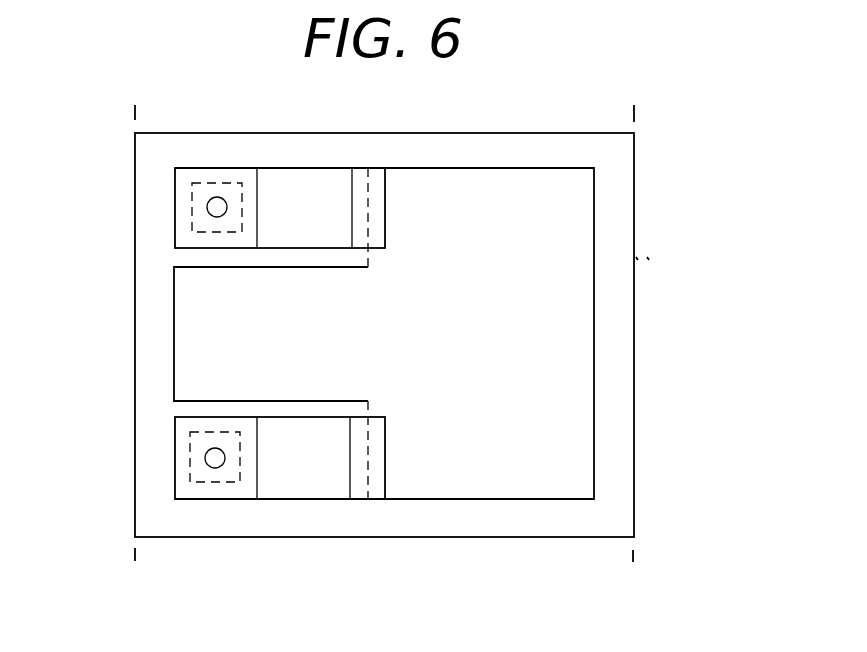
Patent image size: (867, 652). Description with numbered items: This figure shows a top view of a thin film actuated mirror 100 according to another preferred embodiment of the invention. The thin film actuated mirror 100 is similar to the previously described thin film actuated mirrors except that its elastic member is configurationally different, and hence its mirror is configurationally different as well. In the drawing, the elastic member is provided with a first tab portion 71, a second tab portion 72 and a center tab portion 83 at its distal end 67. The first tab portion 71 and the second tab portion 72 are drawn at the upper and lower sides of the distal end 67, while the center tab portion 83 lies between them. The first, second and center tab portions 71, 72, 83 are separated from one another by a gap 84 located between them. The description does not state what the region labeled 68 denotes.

The ferrule body 100 is at (537, 107).
The inner opening 68 is at (558, 330).
The first locking block 71 is at (294, 190).
The second locking block 72 is at (303, 478).
The channel 83 is at (337, 327).
The slot passage 67 is at (253, 352).
The gap 84 is at (198, 258).